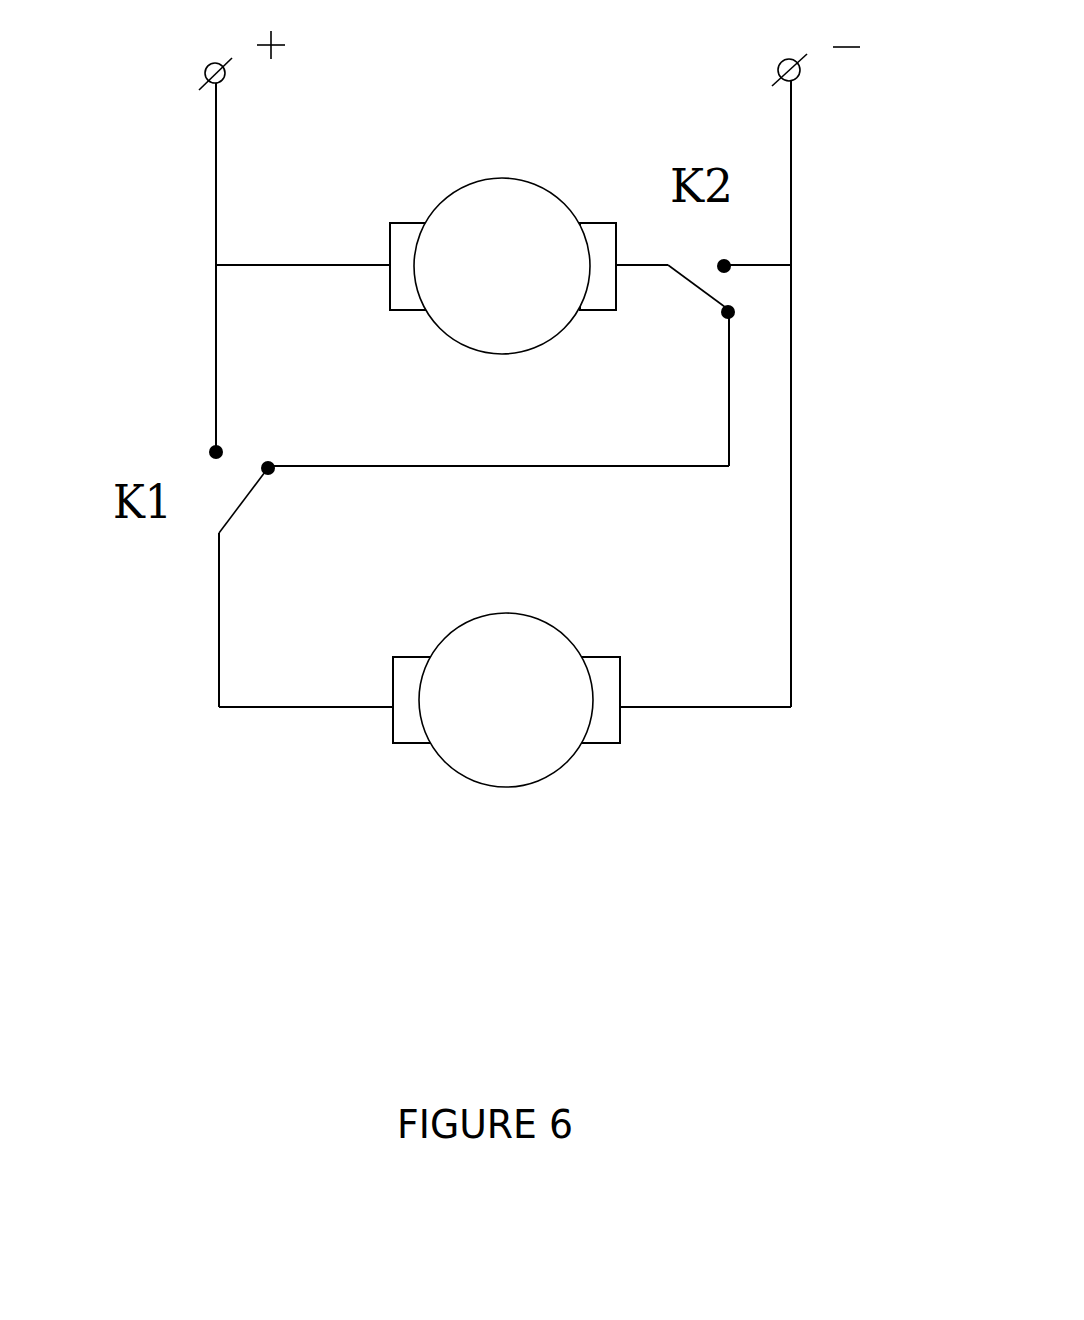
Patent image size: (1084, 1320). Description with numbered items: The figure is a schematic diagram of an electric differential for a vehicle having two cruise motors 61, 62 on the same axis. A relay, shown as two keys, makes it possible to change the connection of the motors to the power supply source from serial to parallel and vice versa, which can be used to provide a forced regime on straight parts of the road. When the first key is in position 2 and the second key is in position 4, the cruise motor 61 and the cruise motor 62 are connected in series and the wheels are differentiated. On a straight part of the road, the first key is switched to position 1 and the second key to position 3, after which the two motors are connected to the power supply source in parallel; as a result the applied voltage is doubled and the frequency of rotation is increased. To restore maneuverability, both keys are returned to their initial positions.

The cruise motor 61 is at (477, 207).
The cruise motor 62 is at (528, 762).
The position of key K1 1 is at (200, 432).
The position of key K1 2 is at (283, 446).
The position of key K2 3 is at (739, 245).
The position of key K2 4 is at (710, 325).